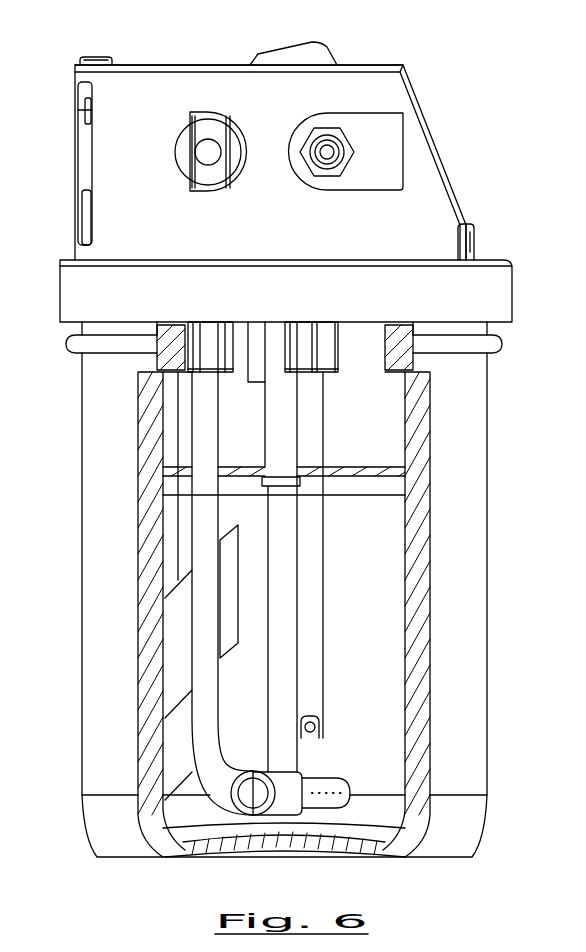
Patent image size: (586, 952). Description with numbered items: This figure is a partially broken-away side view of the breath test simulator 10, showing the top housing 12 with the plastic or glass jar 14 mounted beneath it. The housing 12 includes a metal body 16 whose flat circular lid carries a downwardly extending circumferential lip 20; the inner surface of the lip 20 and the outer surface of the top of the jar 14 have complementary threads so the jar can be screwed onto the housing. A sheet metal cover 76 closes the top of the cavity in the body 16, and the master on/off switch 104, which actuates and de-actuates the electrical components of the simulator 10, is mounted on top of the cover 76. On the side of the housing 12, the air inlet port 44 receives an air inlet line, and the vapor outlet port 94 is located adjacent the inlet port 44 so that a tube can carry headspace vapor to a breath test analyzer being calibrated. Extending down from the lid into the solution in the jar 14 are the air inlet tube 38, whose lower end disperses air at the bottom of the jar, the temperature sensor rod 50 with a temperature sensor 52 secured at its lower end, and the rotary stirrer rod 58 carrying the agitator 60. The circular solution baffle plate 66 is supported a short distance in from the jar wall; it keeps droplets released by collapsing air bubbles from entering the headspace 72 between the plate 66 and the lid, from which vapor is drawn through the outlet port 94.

The breath test simulator 10 is at (289, 435).
The top housing 12 is at (254, 137).
The jar 14 is at (281, 589).
The metal body 16 is at (73, 148).
The circumferential lip 20 is at (512, 294).
The air inlet tube 38 is at (203, 527).
The air inlet port 44 is at (228, 156).
The temperature sensor rod 50 is at (396, 547).
The temperature sensor 52 is at (315, 739).
The rotary stirrer rod 58 is at (178, 422).
The agitator 60 is at (223, 659).
The circular solution baffle plate 66 is at (351, 465).
The headspace 72 is at (254, 429).
The sheet metal cover 76 is at (163, 64).
The vapor outlet port 94 is at (331, 166).
The master on/off switch 104 is at (290, 47).